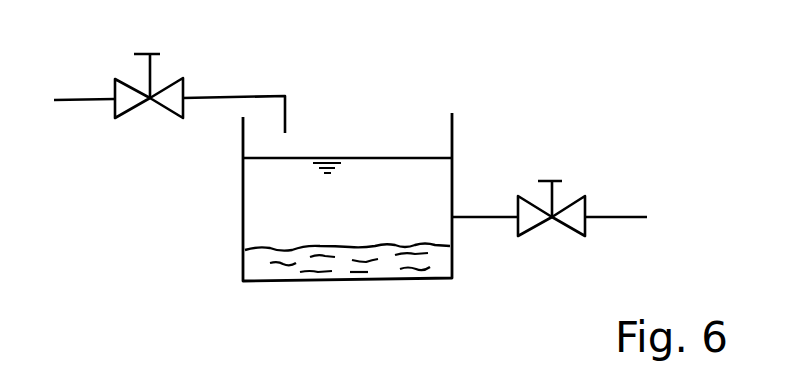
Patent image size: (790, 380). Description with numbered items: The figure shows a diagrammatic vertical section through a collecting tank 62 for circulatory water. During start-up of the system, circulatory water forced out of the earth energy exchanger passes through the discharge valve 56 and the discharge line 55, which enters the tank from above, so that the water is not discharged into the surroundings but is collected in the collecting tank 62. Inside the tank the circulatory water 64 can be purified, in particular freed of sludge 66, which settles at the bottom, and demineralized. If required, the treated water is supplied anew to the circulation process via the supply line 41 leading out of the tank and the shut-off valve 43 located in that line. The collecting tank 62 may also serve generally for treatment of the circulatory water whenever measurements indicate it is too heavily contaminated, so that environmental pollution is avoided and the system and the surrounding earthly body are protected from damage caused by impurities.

The supply line 41 is at (612, 213).
The shut-off valve 43 is at (530, 212).
The discharge line 55 is at (240, 95).
The discharge valve 56 is at (165, 101).
The collecting tank 62 is at (243, 217).
The circulatory water 64 is at (363, 177).
The sludge 66 is at (302, 270).